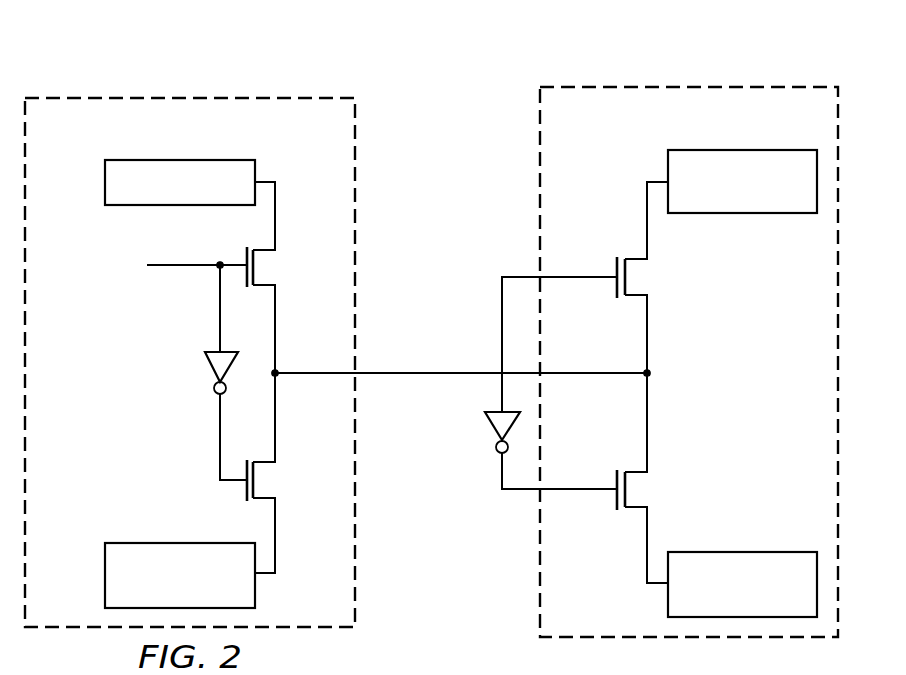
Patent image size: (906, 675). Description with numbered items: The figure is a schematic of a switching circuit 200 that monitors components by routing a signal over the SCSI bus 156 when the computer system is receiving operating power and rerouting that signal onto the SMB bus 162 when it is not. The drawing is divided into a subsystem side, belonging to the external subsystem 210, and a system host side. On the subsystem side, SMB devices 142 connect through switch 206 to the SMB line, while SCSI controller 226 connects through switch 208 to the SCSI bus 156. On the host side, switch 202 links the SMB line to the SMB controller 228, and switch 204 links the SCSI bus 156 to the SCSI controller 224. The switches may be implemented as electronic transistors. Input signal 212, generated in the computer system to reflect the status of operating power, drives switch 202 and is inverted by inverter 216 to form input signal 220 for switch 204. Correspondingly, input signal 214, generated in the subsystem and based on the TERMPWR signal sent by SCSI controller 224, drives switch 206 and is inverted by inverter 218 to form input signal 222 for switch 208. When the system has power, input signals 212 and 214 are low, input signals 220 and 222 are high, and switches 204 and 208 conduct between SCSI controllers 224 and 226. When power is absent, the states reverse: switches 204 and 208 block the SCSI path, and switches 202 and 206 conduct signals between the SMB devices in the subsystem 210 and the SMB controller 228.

The switching circuit 200 is at (637, 61).
The external subsystem 210 is at (295, 138).
The SMB 142 is at (105, 178).
The SMB bus 162 is at (278, 198).
The SCSI bus 156 is at (280, 558).
The switch 206 is at (246, 253).
The switch 208 is at (246, 490).
The input signal 214 is at (199, 268).
The inverter 218 is at (210, 370).
The input signal 222 is at (218, 440).
The SCSI controller 226 is at (105, 580).
The input signal 212 is at (500, 300).
The inverter 216 is at (492, 428).
The input signal 220 is at (500, 472).
The switch 202 is at (615, 262).
The switch 204 is at (614, 502).
The SMB controller 228 is at (753, 213).
The SCSI controller 224 is at (753, 552).